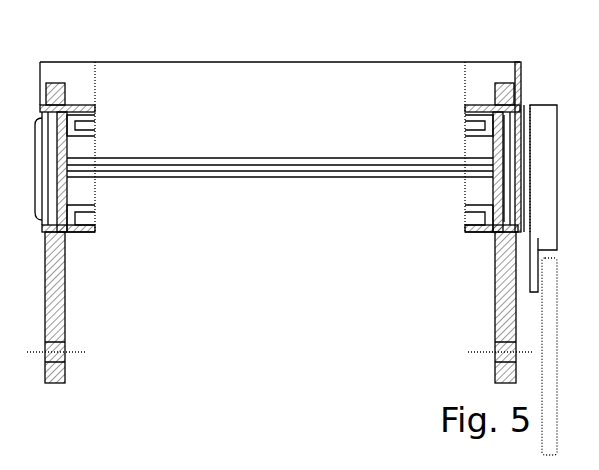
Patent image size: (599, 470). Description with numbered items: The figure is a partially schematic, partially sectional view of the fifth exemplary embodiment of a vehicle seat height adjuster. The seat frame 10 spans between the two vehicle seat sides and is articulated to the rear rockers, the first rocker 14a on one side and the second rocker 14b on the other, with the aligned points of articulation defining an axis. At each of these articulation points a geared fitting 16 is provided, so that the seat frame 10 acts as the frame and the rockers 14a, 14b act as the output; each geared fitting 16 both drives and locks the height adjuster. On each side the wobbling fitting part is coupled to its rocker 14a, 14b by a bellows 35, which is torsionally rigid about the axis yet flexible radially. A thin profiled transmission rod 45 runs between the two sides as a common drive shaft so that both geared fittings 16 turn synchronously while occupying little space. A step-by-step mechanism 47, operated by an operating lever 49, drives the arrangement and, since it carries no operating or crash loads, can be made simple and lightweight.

The seat frame 10 is at (257, 62).
The geared fitting 16 is at (40, 229).
The bellows 35 is at (95, 232).
The transmission rod 45 is at (290, 165).
The step-by-step mechanism 47 is at (548, 177).
The operating lever 49 is at (548, 343).
The first rocker 14a is at (503, 315).
The second rocker 14b is at (58, 315).